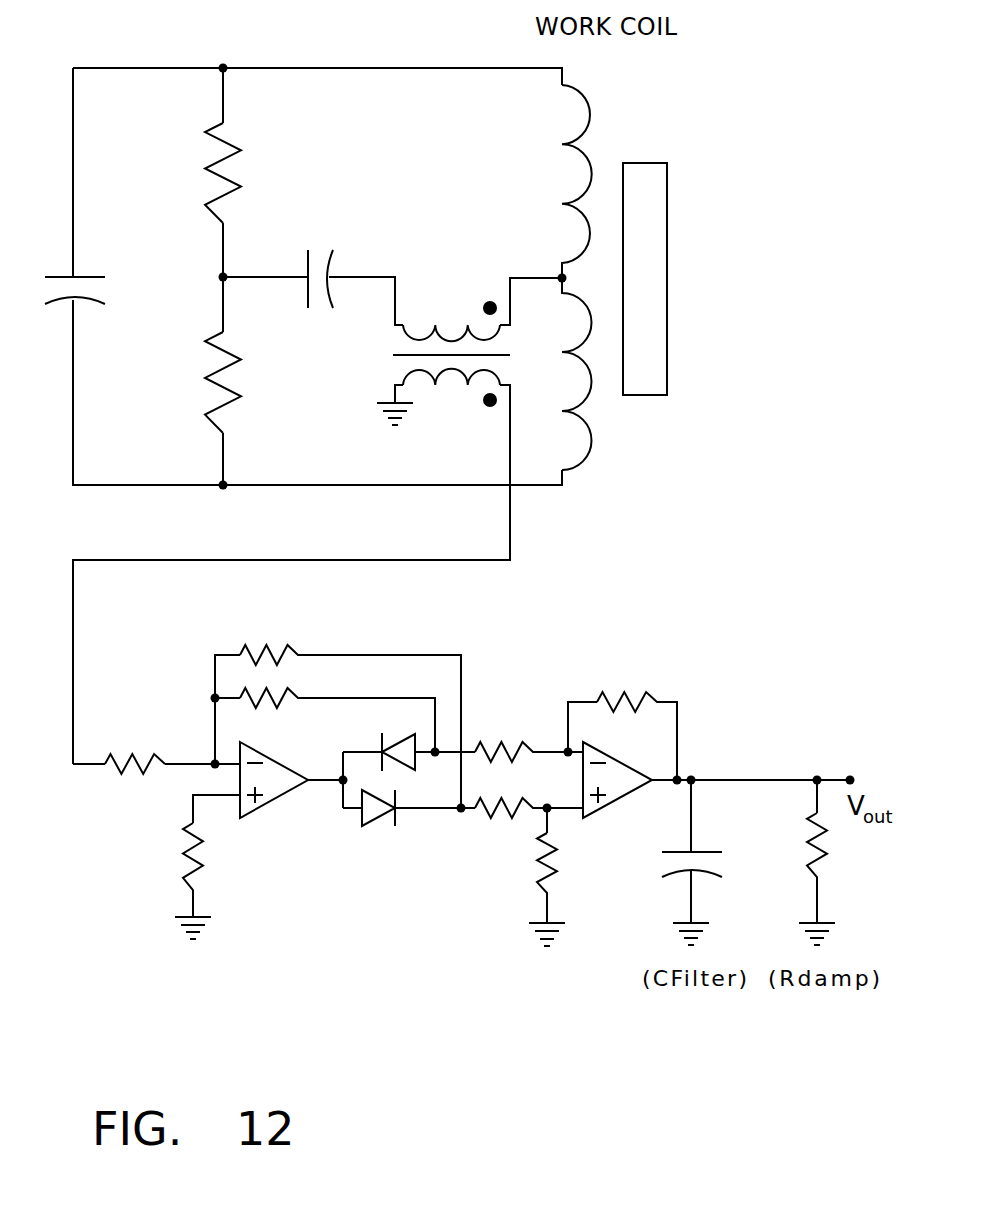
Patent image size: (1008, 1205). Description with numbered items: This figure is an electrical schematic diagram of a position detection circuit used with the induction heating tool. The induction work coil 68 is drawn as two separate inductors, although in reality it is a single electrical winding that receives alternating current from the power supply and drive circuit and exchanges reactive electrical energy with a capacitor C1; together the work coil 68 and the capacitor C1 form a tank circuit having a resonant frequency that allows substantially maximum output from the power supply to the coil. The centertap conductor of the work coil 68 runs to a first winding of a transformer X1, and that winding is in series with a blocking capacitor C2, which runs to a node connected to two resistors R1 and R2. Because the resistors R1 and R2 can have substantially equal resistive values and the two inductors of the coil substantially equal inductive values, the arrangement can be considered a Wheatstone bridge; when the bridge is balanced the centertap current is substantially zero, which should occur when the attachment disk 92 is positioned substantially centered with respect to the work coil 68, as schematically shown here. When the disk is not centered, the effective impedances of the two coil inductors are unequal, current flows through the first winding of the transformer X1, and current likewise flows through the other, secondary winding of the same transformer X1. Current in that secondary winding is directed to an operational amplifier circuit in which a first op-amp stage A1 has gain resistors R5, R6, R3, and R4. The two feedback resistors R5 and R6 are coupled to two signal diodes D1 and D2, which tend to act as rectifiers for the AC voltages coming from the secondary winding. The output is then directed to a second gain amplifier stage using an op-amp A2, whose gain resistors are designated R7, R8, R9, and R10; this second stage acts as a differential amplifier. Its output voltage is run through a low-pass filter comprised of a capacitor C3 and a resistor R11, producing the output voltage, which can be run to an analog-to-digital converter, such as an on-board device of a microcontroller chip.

The induction work coil 68 is at (585, 153).
The attachment disk 92 is at (667, 202).
The resistor R1 is at (206, 173).
The resistor R2 is at (205, 382).
The gain resistor R3 is at (135, 741).
The gain resistor R4 is at (209, 881).
The feedback resistor R5 is at (350, 715).
The feedback resistor R6 is at (337, 720).
The gain resistor R7 is at (529, 740).
The gain resistor R8 is at (529, 822).
The gain resistor R9 is at (560, 877).
The gain resistor R10 is at (622, 718).
The resistor R11 is at (798, 862).
The capacitor C1 is at (93, 291).
The blocking capacitor C2 is at (319, 262).
The capacitor C3 is at (675, 862).
The signal diode D1 is at (395, 743).
The signal diode D2 is at (384, 823).
The op-amp A1 is at (274, 786).
The op-amp A2 is at (617, 789).
The transformer X1 is at (443, 338).